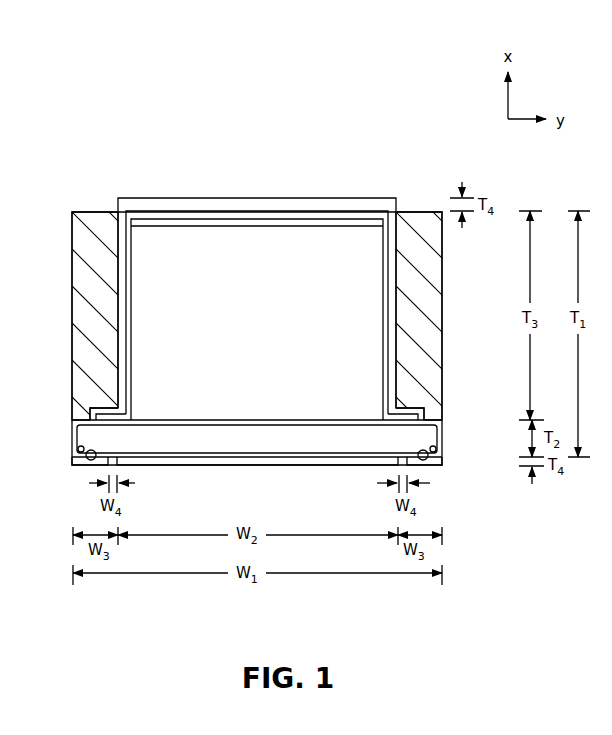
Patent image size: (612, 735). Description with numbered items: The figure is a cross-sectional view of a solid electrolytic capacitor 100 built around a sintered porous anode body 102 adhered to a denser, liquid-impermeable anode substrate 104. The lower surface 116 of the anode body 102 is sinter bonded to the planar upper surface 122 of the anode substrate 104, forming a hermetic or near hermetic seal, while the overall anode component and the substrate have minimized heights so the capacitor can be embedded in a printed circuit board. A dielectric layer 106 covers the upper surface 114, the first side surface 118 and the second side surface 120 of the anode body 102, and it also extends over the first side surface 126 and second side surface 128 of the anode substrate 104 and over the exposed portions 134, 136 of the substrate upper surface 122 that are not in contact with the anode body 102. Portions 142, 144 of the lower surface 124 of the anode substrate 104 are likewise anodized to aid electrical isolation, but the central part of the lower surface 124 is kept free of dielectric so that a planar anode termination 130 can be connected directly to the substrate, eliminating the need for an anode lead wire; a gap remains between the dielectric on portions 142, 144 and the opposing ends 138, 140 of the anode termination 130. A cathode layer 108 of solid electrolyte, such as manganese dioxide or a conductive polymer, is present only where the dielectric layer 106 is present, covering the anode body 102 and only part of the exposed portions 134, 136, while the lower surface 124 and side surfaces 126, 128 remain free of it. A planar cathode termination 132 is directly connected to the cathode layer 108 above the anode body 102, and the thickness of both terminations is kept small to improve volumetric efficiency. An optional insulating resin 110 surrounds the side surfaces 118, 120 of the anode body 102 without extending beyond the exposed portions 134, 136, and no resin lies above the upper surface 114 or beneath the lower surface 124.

The solid electrolytic capacitor 100 is at (176, 86).
The porous anode body 102 is at (229, 328).
The anode substrate 104 is at (231, 450).
The dielectric layer 106 is at (128, 348).
The cathode layer 108 is at (118, 252).
The insulating resin 110 is at (82, 290).
The upper surface of the anode body 114 is at (188, 226).
The lower surface of the anode body 116 is at (160, 421).
The first side surface of the anode body 118 is at (125, 388).
The second side surface of the anode body 120 is at (395, 383).
The upper surface of the anode substrate 122 is at (315, 428).
The lower surface of the anode substrate 124 is at (180, 460).
The first side surface of the anode substrate 126 is at (80, 451).
The second side surface of the anode substrate 128 is at (444, 458).
The anode termination 130 is at (262, 460).
The cathode termination 132 is at (300, 199).
The exposed portion of the upper surface of the anode substrate 134 is at (84, 422).
The exposed portion of the upper surface of the anode substrate 136 is at (434, 422).
The end of the anode termination 138 is at (146, 463).
The end of the anode termination 140 is at (396, 468).
The portion of the lower surface of the anode substrate 142 is at (92, 460).
The portion of the lower surface of the anode substrate 144 is at (426, 460).